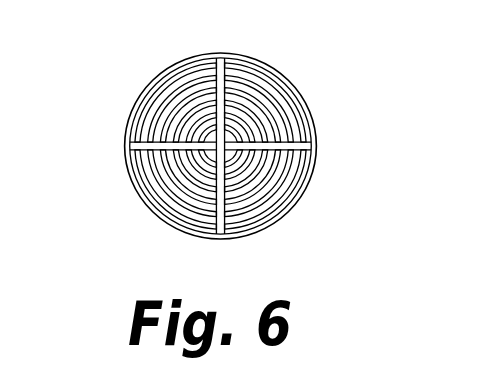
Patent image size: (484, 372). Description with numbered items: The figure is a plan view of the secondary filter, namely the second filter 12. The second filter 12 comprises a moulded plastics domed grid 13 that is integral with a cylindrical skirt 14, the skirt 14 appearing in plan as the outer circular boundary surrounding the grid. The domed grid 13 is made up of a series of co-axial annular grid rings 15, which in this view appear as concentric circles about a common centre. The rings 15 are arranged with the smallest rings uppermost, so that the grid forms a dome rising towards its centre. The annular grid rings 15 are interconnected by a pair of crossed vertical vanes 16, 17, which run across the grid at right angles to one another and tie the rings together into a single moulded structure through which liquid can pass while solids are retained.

The second filter 12 is at (115, 115).
The domed grid 13 is at (291, 128).
The cylindrical skirt 14 is at (303, 193).
The annular grid rings 15 is at (207, 217).
The vertical vane 16 is at (238, 140).
The vertical vane 17 is at (224, 194).